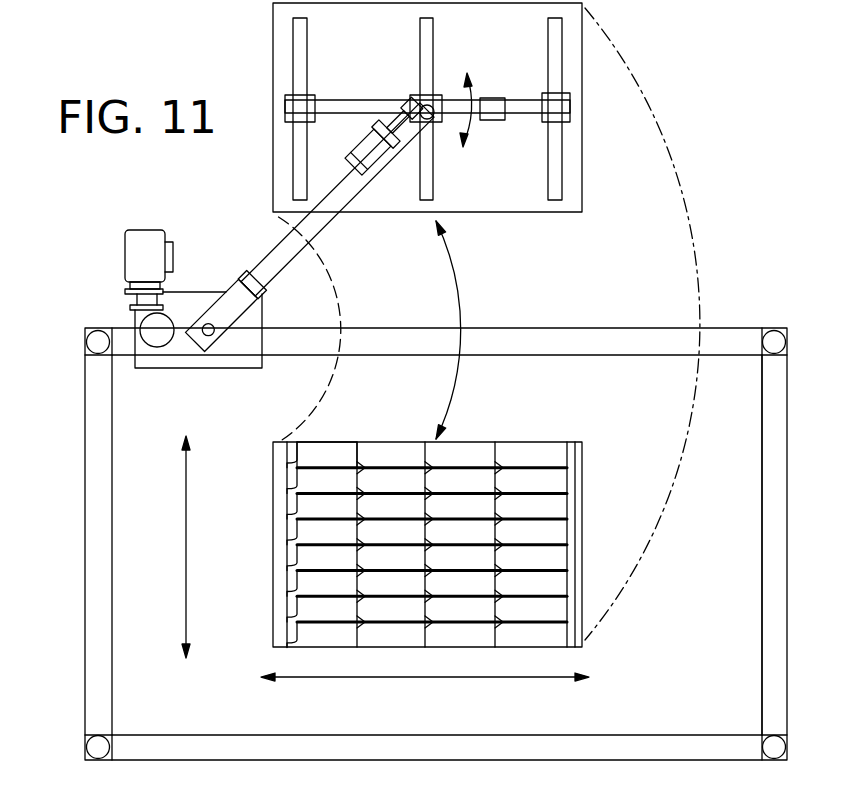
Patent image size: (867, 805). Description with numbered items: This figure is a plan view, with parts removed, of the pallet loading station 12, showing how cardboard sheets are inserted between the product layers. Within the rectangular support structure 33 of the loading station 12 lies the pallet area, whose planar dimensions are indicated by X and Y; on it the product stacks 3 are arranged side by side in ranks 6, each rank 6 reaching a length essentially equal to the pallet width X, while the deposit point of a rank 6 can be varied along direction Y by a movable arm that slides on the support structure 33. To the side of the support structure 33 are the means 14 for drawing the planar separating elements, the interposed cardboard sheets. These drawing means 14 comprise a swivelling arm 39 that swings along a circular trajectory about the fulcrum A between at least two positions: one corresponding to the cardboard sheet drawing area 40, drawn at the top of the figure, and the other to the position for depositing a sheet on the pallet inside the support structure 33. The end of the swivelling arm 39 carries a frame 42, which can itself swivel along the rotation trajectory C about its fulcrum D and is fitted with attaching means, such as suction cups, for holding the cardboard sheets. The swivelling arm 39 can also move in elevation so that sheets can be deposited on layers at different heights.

The product stack 3 is at (305, 457).
The rank 6 is at (316, 441).
The pallet loading station 12 is at (82, 404).
The means for drawing planar separating elements 14 is at (262, 245).
The support structure 33 is at (767, 550).
The swivelling arm 39 is at (296, 226).
The cardboard sheet drawing area 40 is at (588, 107).
The frame 42 is at (562, 178).
The fulcrum A is at (209, 338).
The rotation trajectory C is at (475, 104).
The fulcrum D is at (426, 98).
The pallet planar dimension X is at (173, 547).
The pallet planar dimension Y is at (425, 692).